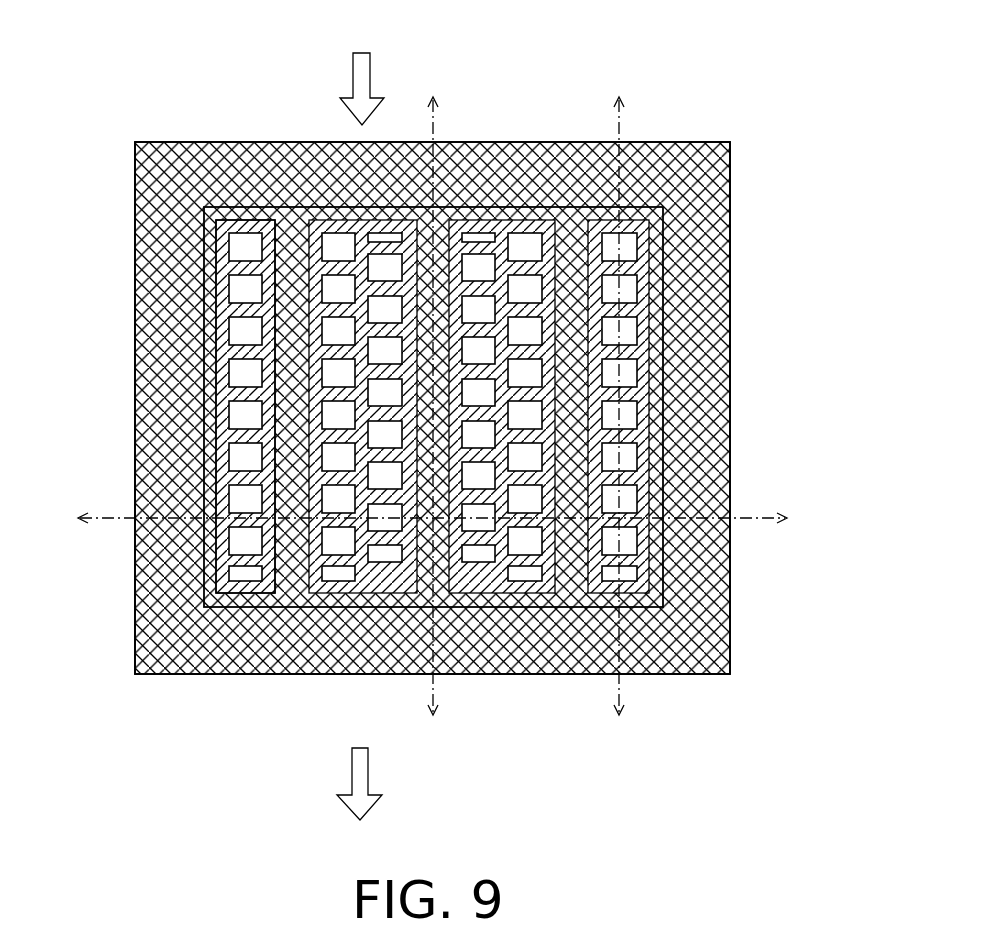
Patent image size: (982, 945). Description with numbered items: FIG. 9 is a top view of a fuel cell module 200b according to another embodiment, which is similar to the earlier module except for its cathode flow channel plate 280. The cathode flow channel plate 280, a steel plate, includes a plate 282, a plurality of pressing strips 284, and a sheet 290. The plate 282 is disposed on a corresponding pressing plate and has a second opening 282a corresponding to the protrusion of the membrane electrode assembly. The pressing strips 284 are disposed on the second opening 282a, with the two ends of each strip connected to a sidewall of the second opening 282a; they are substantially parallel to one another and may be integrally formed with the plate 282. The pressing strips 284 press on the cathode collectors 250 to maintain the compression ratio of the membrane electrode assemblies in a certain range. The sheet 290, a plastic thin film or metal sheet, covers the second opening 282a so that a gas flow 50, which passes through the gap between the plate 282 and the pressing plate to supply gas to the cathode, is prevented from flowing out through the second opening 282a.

The fuel cell module 200b is at (467, 416).
The cathode flow channel plate 280 is at (507, 422).
The plate 282 is at (675, 655).
The second opening 282a is at (218, 247).
The pressing strips 284 is at (574, 571).
The sheet 290 is at (670, 540).
The cathode collectors 250 is at (502, 257).
The gas flow 50 is at (352, 77).